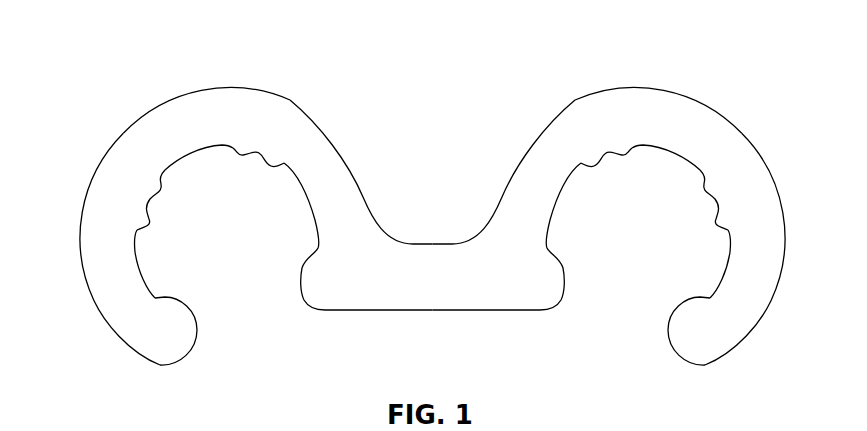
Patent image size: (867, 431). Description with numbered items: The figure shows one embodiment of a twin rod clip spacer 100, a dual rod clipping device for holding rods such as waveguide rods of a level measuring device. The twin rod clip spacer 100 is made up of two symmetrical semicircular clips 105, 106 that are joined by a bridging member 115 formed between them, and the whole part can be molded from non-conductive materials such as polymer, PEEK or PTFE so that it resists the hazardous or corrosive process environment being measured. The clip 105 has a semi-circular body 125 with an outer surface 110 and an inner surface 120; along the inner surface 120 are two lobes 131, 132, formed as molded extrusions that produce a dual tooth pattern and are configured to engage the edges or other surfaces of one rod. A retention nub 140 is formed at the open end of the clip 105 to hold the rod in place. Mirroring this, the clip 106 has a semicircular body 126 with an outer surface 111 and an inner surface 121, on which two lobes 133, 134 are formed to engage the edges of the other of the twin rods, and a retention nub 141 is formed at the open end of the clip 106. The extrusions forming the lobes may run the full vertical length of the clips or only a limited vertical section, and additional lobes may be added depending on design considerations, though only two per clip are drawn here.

The twin rod clip spacer 100 is at (426, 202).
The clip 105 is at (205, 212).
The clip 106 is at (645, 217).
The outer surface 110 is at (267, 96).
The outer surface 111 is at (750, 138).
The bridging member 115 is at (435, 292).
The inner surface 120 is at (140, 267).
The inner surface 121 is at (717, 288).
The semi-circular body 125 is at (99, 163).
The semicircular body 126 is at (697, 127).
The lobe 131 is at (137, 213).
The lobe 132 is at (284, 163).
The lobe 133 is at (581, 163).
The lobe 134 is at (727, 210).
The retention nub 140 is at (163, 343).
The retention nub 141 is at (703, 342).